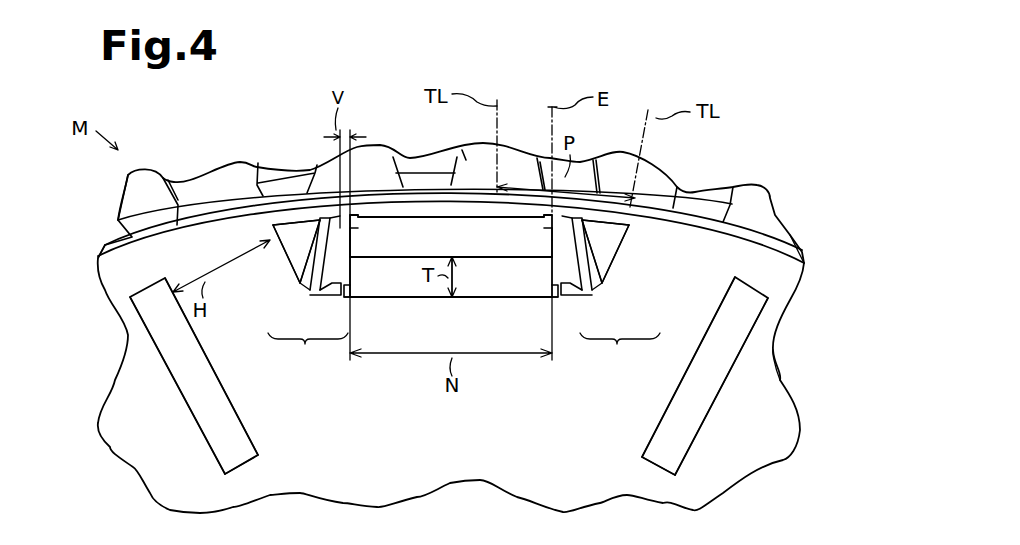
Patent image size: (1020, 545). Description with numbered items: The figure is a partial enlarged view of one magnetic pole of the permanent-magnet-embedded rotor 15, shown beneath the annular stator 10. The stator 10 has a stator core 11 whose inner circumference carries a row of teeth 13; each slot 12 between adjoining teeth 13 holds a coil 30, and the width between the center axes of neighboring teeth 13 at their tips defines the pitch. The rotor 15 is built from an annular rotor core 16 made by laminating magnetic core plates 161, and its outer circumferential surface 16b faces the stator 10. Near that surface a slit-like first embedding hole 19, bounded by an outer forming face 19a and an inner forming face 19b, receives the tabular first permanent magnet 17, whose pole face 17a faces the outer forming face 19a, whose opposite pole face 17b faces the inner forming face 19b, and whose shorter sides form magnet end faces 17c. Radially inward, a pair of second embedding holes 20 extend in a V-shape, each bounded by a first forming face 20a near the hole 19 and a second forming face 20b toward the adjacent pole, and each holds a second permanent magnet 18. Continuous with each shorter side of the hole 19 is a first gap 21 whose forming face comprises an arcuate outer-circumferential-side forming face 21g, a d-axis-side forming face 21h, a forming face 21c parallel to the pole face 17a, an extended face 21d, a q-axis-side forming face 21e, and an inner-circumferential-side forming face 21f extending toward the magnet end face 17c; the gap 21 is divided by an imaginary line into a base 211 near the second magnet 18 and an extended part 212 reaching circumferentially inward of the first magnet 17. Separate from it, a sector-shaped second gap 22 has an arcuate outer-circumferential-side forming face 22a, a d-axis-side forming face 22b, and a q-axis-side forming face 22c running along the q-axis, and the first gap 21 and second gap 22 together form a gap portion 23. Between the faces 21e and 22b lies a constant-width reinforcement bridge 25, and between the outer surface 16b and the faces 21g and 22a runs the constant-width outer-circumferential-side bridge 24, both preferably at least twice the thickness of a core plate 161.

The stator 10 is at (784, 192).
The stator core 11 is at (187, 184).
The slot 12 is at (461, 160).
The tooth 13 is at (386, 162).
The permanent-magnet-embedded rotor 15 is at (814, 259).
The rotor core 16 is at (788, 298).
The core plate 161 is at (774, 351).
The outer circumferential surface 16b is at (201, 222).
The first permanent magnet 17 is at (466, 253).
The pole face 17a is at (460, 298).
The opposite pole face 17b is at (449, 311).
The magnet end face 17c is at (358, 301).
The second permanent magnet 18 is at (250, 464).
The first embedding hole 19 is at (439, 298).
The outer forming face 19a is at (427, 258).
The inner forming face 19b is at (510, 303).
The second embedding hole 20 is at (256, 430).
The first forming face 20a is at (238, 398).
The second forming face 20b is at (209, 428).
The first gap 21 is at (317, 295).
The forming face 21c is at (351, 231).
The extended face 21d is at (351, 246).
The q-axis-side forming face 21e is at (298, 251).
The inner-circumferential-side forming face 21f is at (342, 303).
The outer-circumferential-side forming face 21g is at (333, 216).
The d-axis-side forming face 21h is at (358, 222).
The base 211 is at (356, 270).
The extended part 212 is at (360, 216).
The second gap 22 is at (298, 286).
The outer-circumferential-side forming face 22a is at (276, 227).
The d-axis-side forming face 22b is at (288, 268).
The q-axis-side forming face 22c is at (293, 290).
The gap portion 23 is at (464, 349).
The outer-circumferential-side bridge 24 is at (268, 202).
The reinforcement bridge 25 is at (351, 288).
The coil 30 is at (273, 176).